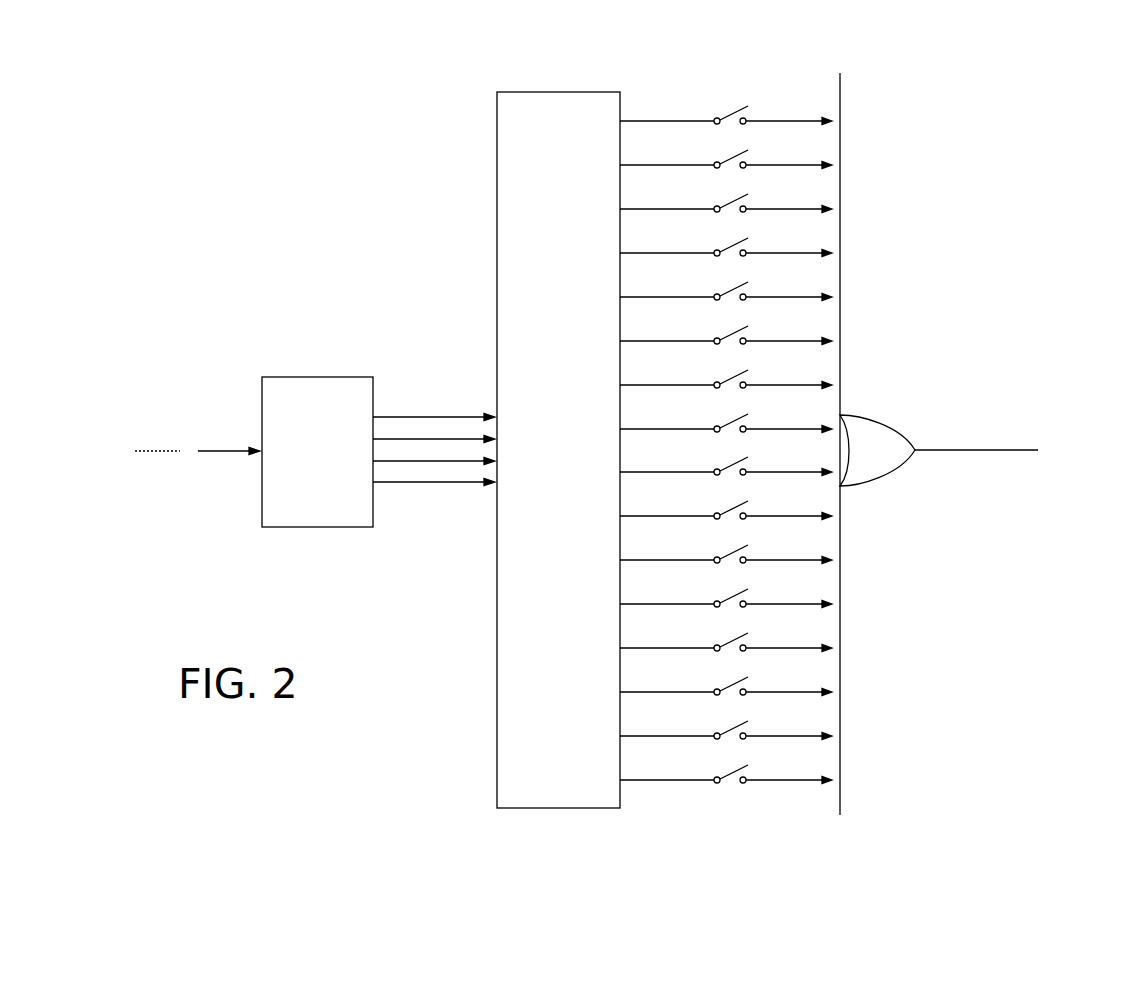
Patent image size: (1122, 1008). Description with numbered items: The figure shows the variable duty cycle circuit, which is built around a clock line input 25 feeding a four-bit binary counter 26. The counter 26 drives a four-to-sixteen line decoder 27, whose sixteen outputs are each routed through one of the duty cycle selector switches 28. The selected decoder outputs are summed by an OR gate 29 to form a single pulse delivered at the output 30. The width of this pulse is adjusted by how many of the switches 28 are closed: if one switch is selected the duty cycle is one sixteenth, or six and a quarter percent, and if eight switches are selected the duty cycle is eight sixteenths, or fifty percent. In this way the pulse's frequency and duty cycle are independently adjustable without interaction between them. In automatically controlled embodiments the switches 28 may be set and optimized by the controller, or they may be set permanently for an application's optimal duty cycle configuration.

The clock line input 25 is at (178, 449).
The 4-bit binary counter 26 is at (308, 398).
The 4-16 line decoder 27 is at (513, 164).
The duty cycle selector switches 28 is at (730, 116).
The OR gate 29 is at (878, 436).
The output 30 is at (972, 450).